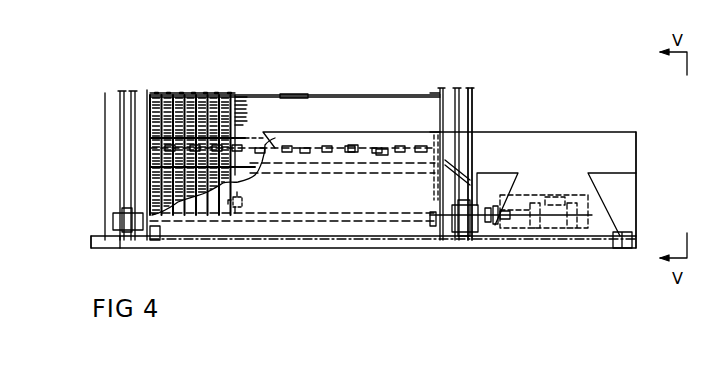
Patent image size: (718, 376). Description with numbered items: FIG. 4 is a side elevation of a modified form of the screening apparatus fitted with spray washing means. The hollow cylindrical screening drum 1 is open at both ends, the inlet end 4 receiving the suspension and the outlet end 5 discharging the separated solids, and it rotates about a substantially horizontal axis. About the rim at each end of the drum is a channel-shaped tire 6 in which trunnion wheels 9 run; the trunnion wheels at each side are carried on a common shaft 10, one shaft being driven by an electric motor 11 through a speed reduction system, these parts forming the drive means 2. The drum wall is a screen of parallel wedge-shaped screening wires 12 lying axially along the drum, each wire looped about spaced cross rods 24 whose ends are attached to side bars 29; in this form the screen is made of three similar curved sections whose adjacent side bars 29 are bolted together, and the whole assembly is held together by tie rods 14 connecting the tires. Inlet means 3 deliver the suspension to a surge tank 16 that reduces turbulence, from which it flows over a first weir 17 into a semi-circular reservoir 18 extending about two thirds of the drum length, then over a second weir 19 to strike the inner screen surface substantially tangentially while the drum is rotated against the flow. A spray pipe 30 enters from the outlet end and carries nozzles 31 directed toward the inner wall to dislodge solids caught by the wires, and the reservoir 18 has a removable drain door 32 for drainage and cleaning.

The screening drum 1 is at (333, 89).
The drive means 2 is at (545, 175).
The inlet means 3 is at (638, 130).
The inlet end 4 is at (476, 112).
The outlet end 5 is at (105, 128).
The tire 6 is at (134, 92).
The trunnion wheels 9 is at (118, 215).
The common shaft 10 is at (296, 220).
The electric motor 11 is at (549, 222).
The screening wires 12 is at (176, 105).
The tie rods 14 is at (383, 96).
The surge tank 16 is at (572, 148).
The first weir 17 is at (473, 160).
The semi-circular reservoir 18 is at (356, 197).
The second weir 19 is at (390, 173).
The cross rods 24 is at (234, 110).
The side bars 29 is at (225, 170).
The carrier 30 is at (290, 147).
The nozzles 31 is at (380, 152).
The drain door 32 is at (235, 214).